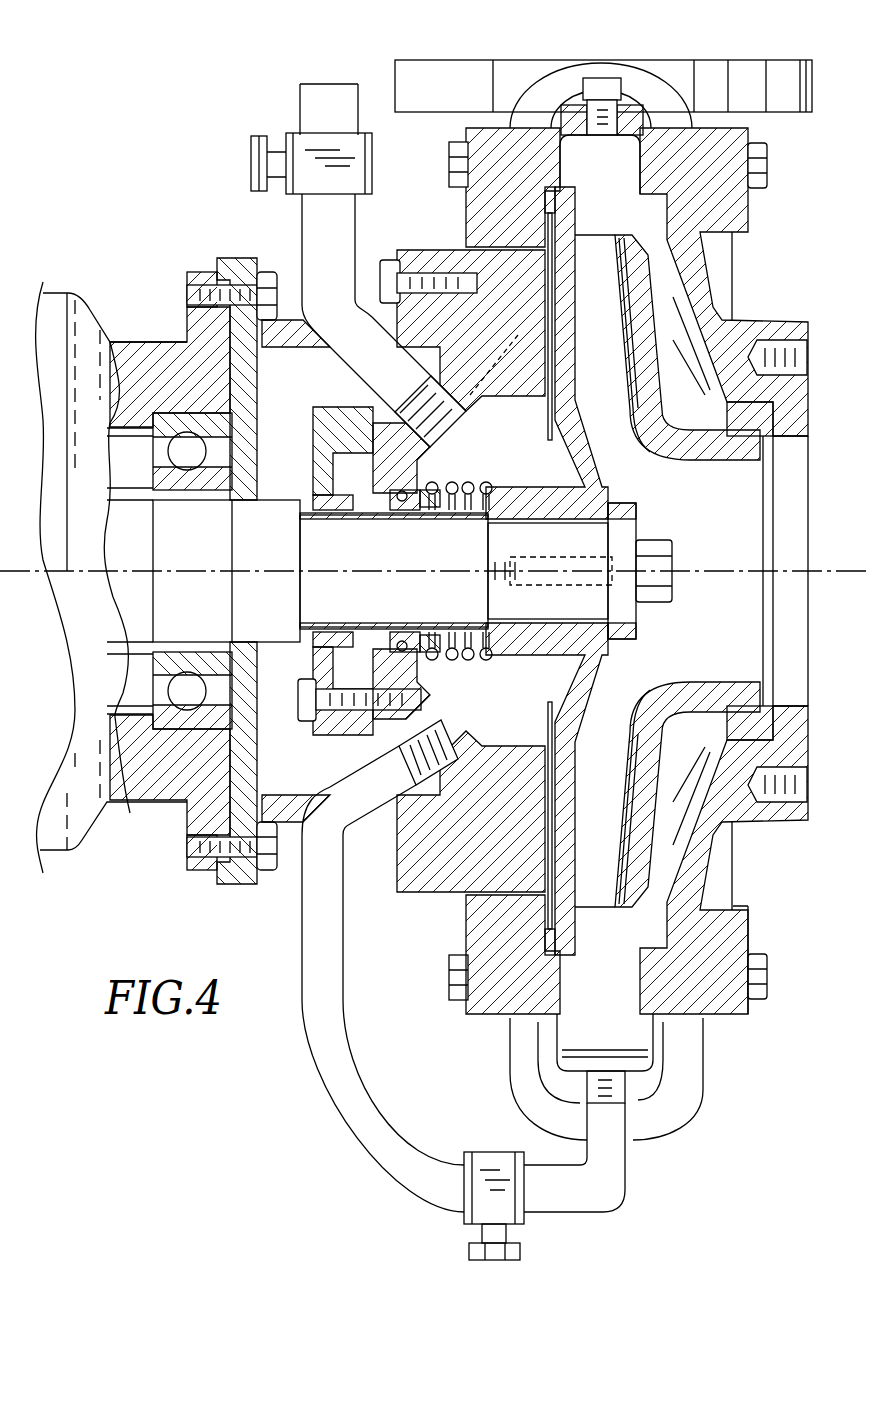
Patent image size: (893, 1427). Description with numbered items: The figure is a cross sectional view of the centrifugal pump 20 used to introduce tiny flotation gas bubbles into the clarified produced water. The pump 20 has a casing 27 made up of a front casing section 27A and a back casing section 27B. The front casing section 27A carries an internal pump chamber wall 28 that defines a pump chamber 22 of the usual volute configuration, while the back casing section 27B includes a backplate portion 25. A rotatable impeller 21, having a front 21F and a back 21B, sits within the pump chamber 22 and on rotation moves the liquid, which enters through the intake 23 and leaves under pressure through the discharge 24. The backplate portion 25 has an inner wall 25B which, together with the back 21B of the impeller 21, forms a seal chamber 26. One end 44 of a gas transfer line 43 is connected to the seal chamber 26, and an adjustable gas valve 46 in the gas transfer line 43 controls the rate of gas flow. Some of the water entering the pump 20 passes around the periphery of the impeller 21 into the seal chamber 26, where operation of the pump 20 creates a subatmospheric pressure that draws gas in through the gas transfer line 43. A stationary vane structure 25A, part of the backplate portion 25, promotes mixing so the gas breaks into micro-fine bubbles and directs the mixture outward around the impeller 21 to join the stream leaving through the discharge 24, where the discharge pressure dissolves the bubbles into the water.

The pump 20 is at (734, 1085).
The impeller 21 is at (617, 562).
The back of impeller 21B is at (537, 443).
The front of impeller 21F is at (600, 442).
The pump chamber 22 is at (724, 642).
The intake 23 is at (795, 556).
The discharge 24 is at (603, 143).
The backplate portion 25 is at (442, 606).
The stationary vane structure 25A is at (552, 330).
The inner wall 25B is at (475, 352).
The seal chamber 26 is at (476, 473).
The casing 27 is at (623, 538).
The front casing section 27A is at (750, 935).
The back casing section 27B is at (467, 936).
The pump chamber wall 28 is at (700, 765).
The gas transfer line 43 is at (300, 104).
The end of gas transfer line 44 is at (405, 380).
The adjustable gas valve 46 is at (252, 166).